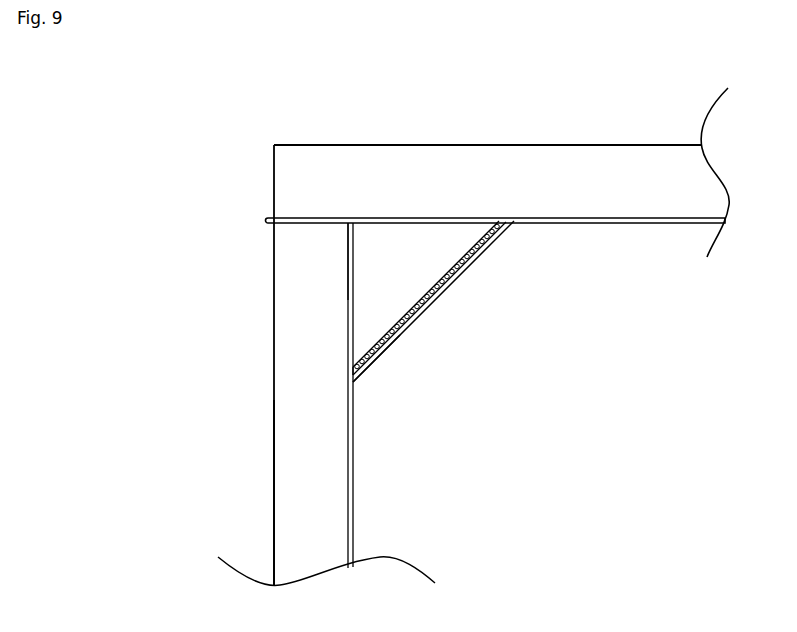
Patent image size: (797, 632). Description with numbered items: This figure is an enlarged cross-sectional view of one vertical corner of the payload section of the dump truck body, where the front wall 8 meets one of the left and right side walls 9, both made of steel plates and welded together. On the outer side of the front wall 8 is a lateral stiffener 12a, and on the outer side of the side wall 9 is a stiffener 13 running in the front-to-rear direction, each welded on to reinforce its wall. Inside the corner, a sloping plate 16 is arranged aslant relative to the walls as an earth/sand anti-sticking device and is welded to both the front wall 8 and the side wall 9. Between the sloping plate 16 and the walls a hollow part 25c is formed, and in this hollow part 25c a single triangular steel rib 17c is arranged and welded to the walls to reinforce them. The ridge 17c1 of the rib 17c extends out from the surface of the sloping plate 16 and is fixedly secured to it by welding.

The front wall 8 is at (348, 418).
The side wall 9 is at (570, 217).
The stiffener 12a is at (274, 475).
The stiffener 13 is at (418, 145).
The sloping plate 16 is at (445, 290).
The rib 17c is at (375, 305).
The ridge 17c1 is at (423, 313).
The hollow part 25c is at (373, 257).